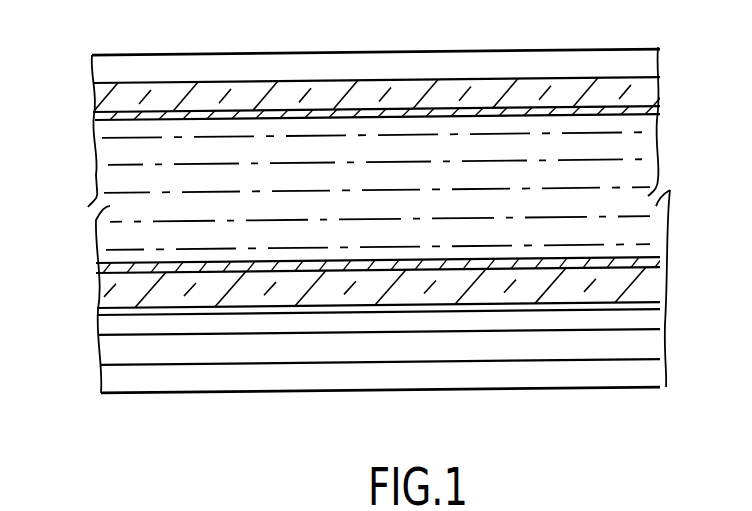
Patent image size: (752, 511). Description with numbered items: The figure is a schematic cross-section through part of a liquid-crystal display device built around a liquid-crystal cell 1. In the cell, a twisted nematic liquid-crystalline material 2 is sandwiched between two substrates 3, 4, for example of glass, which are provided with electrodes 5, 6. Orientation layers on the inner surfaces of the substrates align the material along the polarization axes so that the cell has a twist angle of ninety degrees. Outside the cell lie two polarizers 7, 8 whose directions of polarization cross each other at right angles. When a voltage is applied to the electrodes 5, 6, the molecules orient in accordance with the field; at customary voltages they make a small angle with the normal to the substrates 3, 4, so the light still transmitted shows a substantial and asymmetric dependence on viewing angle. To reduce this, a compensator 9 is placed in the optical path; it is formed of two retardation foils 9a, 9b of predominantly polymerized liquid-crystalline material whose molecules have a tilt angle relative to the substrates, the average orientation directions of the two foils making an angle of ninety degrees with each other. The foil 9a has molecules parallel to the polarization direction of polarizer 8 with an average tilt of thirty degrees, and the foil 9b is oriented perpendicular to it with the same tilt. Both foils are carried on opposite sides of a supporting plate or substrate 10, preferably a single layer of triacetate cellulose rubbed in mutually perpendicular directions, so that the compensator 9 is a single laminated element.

The liquid-crystal cell 1 is at (84, 356).
The liquid-crystalline material 2 is at (635, 173).
The substrate 3 is at (640, 88).
The substrate 4 is at (643, 287).
The electrode 5 is at (648, 113).
The electrode 6 is at (657, 262).
The polarizer 7 is at (632, 56).
The polarizer 8 is at (628, 386).
The compensator 9 is at (673, 300).
The retardation foil 9a is at (335, 310).
The retardation foil 9b is at (413, 347).
The supporting plate or substrate 10 is at (505, 318).